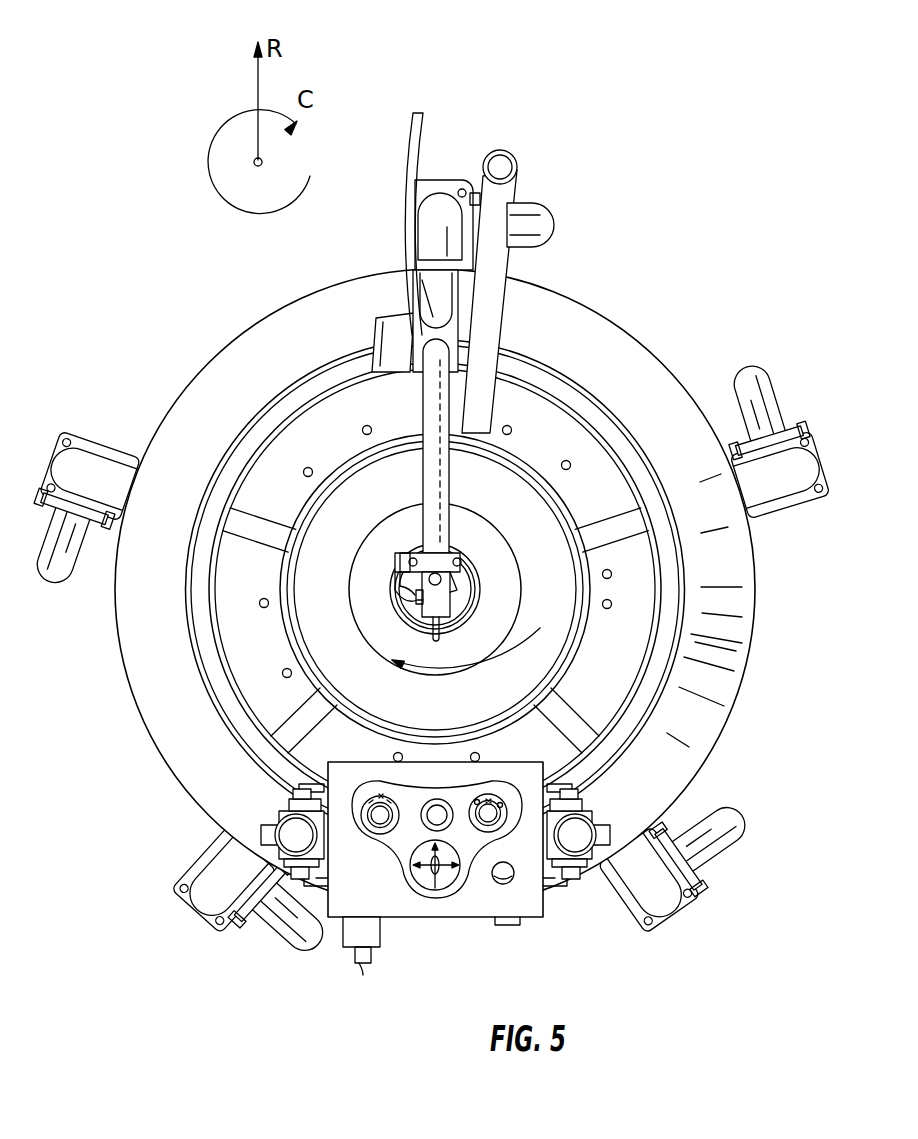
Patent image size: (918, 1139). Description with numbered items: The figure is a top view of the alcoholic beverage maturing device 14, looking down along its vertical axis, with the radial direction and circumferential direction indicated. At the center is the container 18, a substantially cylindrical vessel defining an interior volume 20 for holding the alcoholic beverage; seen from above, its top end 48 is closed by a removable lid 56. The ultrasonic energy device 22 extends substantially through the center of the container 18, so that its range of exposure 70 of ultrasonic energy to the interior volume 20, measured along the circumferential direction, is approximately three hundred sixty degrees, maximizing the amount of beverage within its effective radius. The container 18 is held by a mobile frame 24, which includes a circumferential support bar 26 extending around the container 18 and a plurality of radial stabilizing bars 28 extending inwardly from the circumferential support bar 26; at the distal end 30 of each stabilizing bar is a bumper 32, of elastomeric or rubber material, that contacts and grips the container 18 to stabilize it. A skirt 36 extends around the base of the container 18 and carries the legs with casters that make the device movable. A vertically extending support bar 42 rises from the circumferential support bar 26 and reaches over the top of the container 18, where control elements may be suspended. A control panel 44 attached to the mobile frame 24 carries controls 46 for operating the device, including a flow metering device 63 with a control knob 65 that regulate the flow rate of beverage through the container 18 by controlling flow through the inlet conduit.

The alcoholic beverage maturing device 14 is at (113, 183).
The mobile frame 24 is at (163, 333).
The skirt 36 is at (554, 328).
The circumferential support bar 26 is at (672, 640).
The container 18 is at (520, 505).
The interior volume 20 is at (542, 538).
The top end 48 is at (557, 574).
The ultrasonic energy device 22 is at (489, 614).
The radial stabilizing bars 28 is at (243, 537).
The distal end 30 is at (287, 518).
The bumper 32 is at (283, 552).
The range of exposure 70 is at (367, 638).
The removable lid 56 is at (424, 717).
The vertically extending support bar 42 is at (425, 425).
The control panel 44 is at (527, 855).
The controls 46 is at (480, 880).
The flow metering device 63 is at (333, 947).
The control knob 65 is at (364, 968).